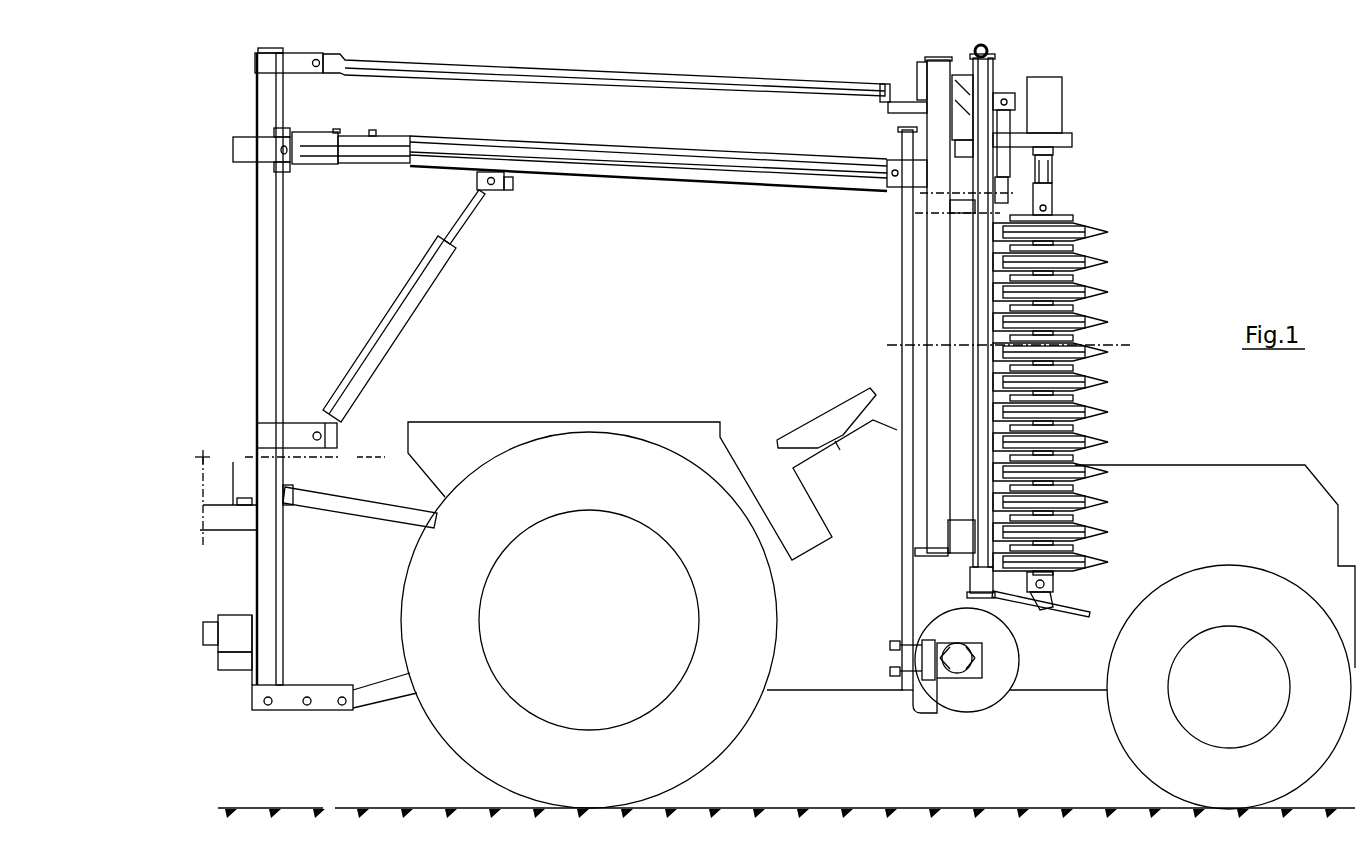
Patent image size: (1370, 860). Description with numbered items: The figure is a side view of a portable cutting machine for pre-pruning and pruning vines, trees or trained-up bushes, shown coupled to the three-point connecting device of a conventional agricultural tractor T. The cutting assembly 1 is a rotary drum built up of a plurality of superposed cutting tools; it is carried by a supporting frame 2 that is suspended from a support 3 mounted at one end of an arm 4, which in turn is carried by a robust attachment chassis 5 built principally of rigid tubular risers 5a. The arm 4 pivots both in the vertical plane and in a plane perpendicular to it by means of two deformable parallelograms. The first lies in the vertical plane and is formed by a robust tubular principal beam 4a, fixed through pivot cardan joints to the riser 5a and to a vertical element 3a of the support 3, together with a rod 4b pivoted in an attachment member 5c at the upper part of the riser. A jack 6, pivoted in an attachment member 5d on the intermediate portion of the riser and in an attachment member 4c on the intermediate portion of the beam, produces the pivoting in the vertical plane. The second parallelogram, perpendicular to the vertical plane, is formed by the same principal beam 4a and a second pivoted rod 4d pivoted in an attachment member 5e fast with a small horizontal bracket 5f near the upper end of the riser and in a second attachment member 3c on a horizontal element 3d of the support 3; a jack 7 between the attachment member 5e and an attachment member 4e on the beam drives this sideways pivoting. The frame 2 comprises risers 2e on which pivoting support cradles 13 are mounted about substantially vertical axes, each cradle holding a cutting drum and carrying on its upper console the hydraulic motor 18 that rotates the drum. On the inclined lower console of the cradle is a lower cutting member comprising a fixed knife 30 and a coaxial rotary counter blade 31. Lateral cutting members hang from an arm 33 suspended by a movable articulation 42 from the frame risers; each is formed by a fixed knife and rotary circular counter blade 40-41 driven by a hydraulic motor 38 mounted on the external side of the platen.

The cutting assembly 1 is at (1120, 312).
The supporting frame 2 is at (1013, 203).
The riser of the support frame 2e is at (907, 488).
The support 3 is at (998, 92).
The vertical element of the support 3a is at (1012, 128).
The second attachment member 3c is at (1073, 142).
The horizontal element of the support 3d is at (1057, 160).
The arm 4 is at (872, 148).
The principal beam 4a is at (735, 157).
The rod 4b is at (363, 66).
The attachment member 4c is at (480, 195).
The second pivoted rod 4d is at (683, 168).
The attachment member 4e is at (452, 167).
The attachment chassis 5 is at (252, 377).
The tubular riser 5a is at (270, 558).
The attachment member 5c is at (268, 70).
The attachment member 5d is at (280, 440).
The attachment member 5e is at (270, 165).
The horizontal bracket 5f is at (253, 147).
The jack 6 is at (382, 330).
The jack 7 is at (352, 160).
The pivoting support cradle 13 is at (985, 392).
The hydraulic motor 18 is at (1048, 108).
The fixed knife 30 is at (1087, 605).
The rotary counter blade 31 is at (1140, 510).
The arm 33 is at (938, 447).
The hydraulic motor 38 is at (1107, 561).
The fixed knife and rotary circular counter blade 40-41 is at (995, 690).
The movable articulation 42 is at (893, 128).
The agricultural tractor T is at (1321, 462).